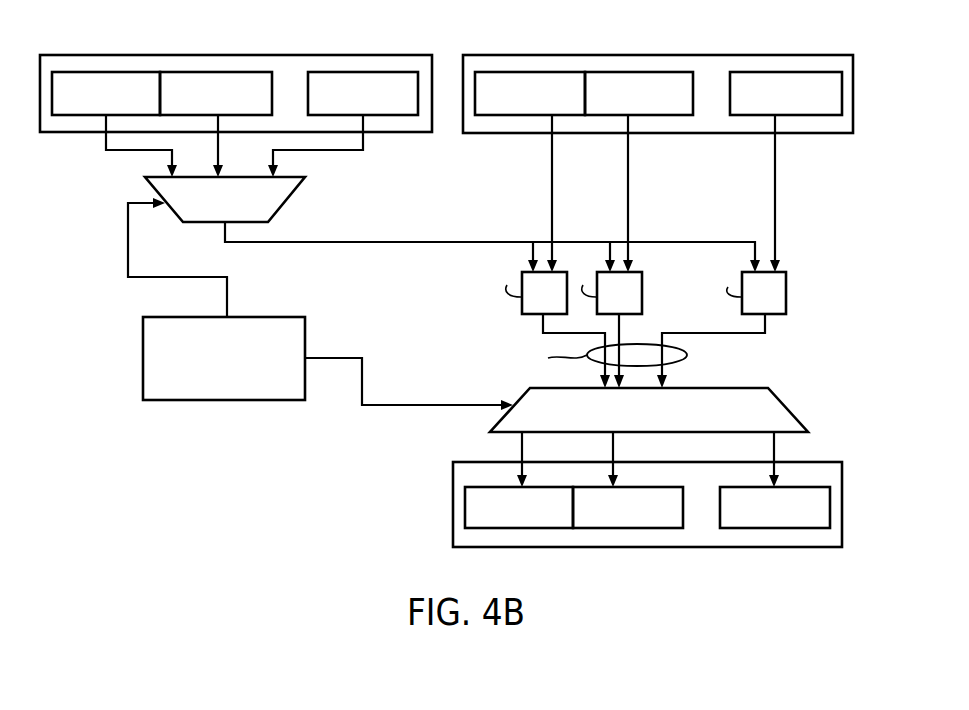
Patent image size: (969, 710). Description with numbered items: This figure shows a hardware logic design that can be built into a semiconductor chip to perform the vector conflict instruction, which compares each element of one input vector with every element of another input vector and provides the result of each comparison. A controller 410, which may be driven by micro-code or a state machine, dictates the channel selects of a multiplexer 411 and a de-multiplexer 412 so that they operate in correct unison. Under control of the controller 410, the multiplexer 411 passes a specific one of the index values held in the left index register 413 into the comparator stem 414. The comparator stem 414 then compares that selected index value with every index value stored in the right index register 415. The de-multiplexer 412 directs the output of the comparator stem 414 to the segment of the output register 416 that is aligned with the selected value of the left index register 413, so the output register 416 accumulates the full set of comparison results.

The controller 410 is at (209, 383).
The multiplexer 411 is at (290, 203).
The de-multiplexer 412 is at (783, 404).
The left index register 413 is at (140, 55).
The comparator stem 414 is at (795, 230).
The right index register 415 is at (757, 55).
The output register 416 is at (453, 490).